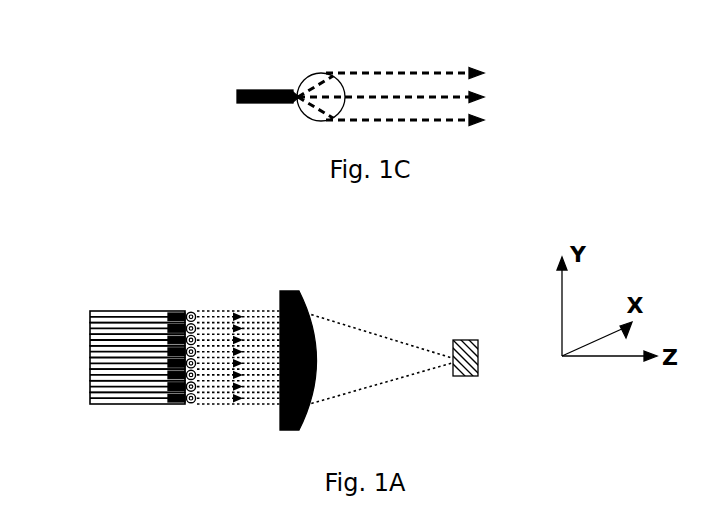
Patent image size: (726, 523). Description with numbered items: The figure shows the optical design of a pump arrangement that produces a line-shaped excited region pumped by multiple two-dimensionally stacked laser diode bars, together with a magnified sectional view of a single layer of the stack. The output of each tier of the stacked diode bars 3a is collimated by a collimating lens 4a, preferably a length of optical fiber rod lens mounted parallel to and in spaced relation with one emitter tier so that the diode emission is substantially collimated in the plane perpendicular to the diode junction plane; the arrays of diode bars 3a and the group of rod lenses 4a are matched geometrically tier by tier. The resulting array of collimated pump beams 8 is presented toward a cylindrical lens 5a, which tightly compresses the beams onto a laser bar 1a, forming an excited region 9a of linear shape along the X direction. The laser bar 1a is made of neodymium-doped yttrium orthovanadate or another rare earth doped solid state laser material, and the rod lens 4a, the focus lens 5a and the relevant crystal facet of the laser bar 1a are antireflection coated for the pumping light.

In FIG. 1C, the 2-D diode bars 3a is at (261, 89).
In FIG. 1A, the 2-D diode bars 3a is at (131, 357).
In FIG. 1C, the collimating lens 4a is at (328, 86).
In FIG. 1A, the collimating lens 4a is at (190, 312).
In FIG. 1C, the collimated pump beams 8 is at (405, 96).
In FIG. 1A, the collimated pump beams 8 is at (248, 355).
In FIG. 1A, the cylindrical lens 5a is at (290, 300).
In FIG. 1A, the excited region 9a is at (452, 356).
In FIG. 1A, the laser bar 1a is at (468, 340).